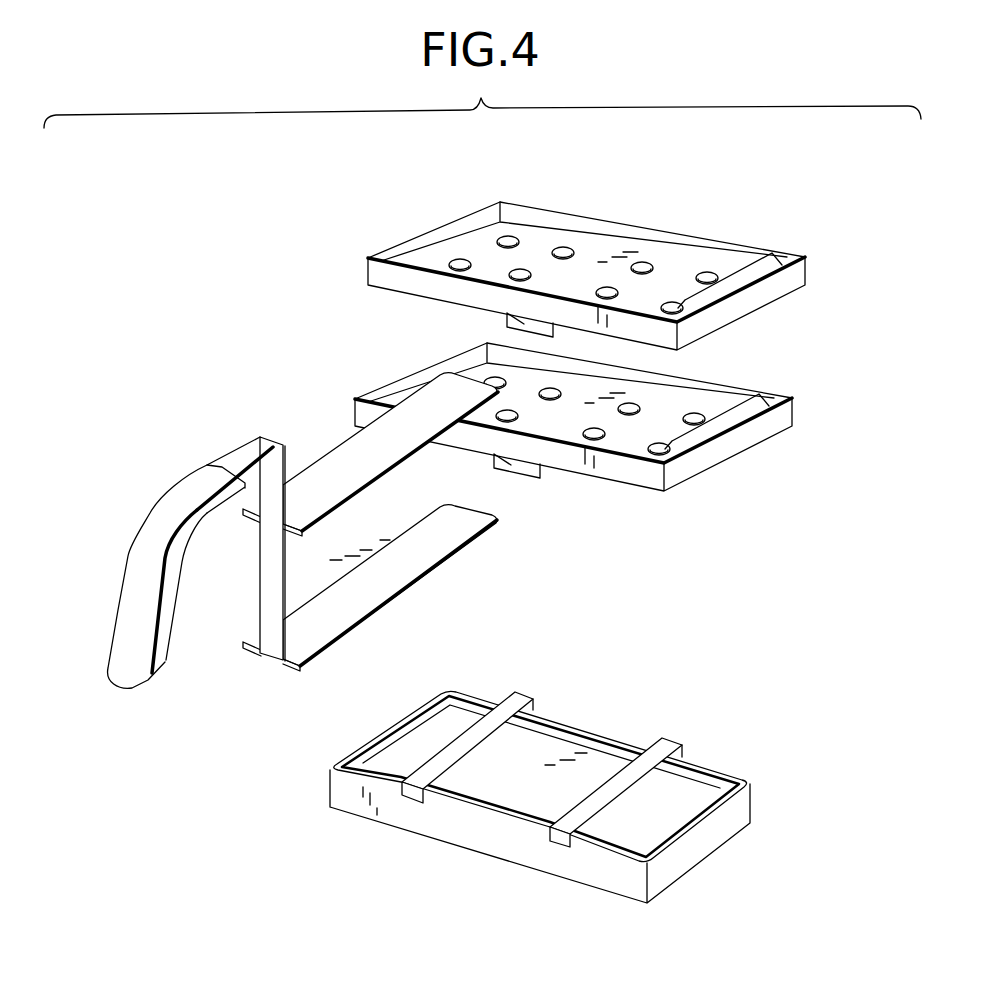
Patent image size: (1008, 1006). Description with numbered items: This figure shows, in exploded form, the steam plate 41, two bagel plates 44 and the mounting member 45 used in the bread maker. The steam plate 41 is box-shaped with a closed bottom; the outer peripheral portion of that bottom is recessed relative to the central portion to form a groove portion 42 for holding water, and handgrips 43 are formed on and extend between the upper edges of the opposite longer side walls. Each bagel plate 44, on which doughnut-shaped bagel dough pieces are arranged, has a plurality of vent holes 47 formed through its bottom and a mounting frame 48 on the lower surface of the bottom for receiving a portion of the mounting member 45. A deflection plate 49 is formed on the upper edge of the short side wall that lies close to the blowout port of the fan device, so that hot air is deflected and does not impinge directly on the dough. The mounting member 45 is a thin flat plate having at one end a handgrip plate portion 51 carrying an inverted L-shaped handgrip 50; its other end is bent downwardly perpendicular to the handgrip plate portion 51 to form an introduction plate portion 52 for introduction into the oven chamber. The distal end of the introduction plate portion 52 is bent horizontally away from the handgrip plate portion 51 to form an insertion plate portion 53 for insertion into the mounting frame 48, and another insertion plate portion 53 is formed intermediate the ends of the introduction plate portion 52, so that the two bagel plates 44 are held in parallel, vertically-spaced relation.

The steam plate 41 is at (596, 772).
The groove portion 42 is at (405, 732).
The handgrips 43 is at (637, 767).
The bagel plate 44 is at (783, 420).
The mounting member 45 is at (279, 508).
The vent holes 47 is at (563, 247).
The mounting frame 48 is at (520, 323).
The deflection plate 49 is at (750, 273).
The handgrip 50 is at (130, 543).
The handgrip plate portion 51 is at (232, 463).
The introduction plate portion 52 is at (268, 583).
The insertion plate portion 53 is at (330, 463).